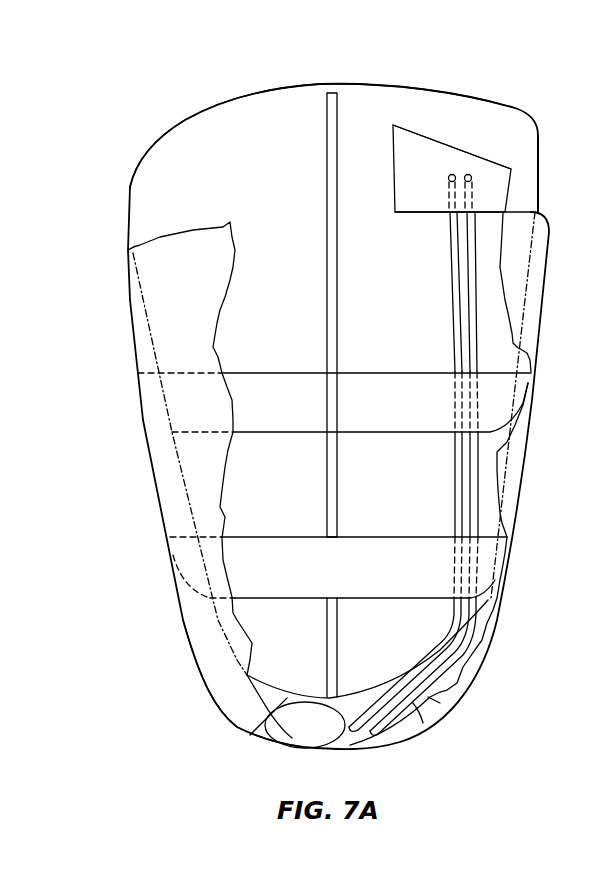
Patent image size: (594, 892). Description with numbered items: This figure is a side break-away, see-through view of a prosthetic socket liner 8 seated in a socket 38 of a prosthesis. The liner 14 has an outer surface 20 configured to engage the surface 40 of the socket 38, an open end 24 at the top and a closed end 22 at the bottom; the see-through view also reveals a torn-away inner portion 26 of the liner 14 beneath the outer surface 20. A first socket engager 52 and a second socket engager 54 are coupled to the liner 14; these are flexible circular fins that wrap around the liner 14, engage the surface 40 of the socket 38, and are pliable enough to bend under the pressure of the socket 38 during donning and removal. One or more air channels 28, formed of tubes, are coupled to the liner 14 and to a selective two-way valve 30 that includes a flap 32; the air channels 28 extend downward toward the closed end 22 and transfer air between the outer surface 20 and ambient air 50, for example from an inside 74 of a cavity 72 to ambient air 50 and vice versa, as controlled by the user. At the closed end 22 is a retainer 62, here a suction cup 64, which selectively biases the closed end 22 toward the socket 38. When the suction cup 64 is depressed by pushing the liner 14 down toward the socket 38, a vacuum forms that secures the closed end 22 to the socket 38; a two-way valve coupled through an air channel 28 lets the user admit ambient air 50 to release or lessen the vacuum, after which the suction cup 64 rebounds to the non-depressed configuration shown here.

The prosthetic socket liner 8 is at (120, 192).
The liner 14 is at (538, 150).
The outer surface 20 is at (263, 150).
The closed end 22 is at (247, 675).
The open end 24 is at (420, 83).
The inner liner 26 is at (128, 250).
The air channels 28 is at (340, 290).
The selective two-way valve 30 is at (450, 143).
The flap 32 is at (395, 165).
The socket 38 is at (185, 642).
The surface 40 is at (520, 365).
The ambient air 50 is at (569, 73).
The first socket engager 52 is at (255, 373).
The second socket engager 54 is at (184, 590).
The retainer 62 is at (250, 735).
The suction cup 64 is at (303, 748).
The cavity 72 is at (421, 722).
The inside 74 is at (428, 697).